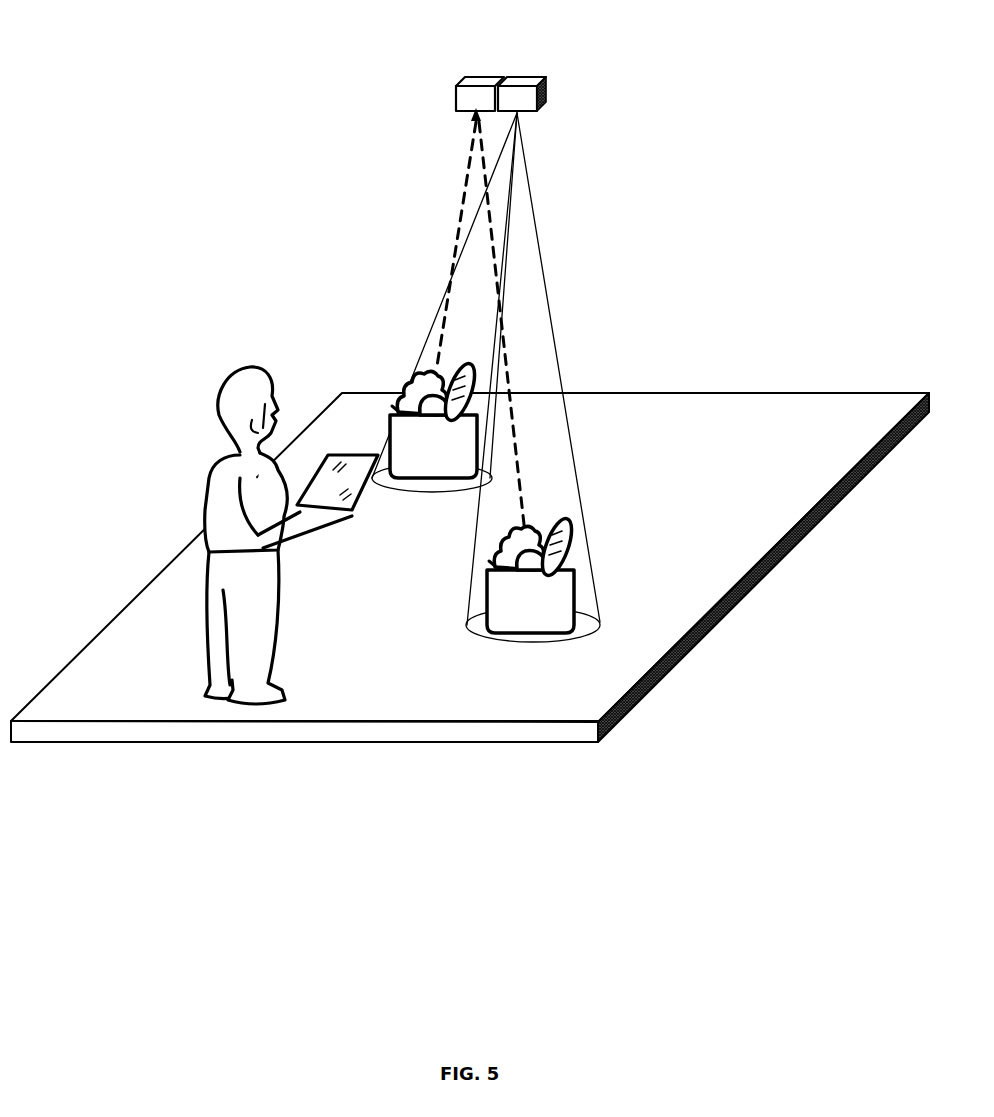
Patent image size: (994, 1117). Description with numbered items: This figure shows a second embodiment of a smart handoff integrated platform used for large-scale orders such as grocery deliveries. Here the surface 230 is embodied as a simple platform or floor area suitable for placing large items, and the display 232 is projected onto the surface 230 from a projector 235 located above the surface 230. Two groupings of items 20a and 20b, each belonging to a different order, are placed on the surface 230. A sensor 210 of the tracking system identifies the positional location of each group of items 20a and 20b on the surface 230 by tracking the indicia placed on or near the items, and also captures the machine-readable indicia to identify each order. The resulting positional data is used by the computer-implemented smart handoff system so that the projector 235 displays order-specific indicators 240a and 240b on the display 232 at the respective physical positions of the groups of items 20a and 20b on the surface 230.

The sensor 210 is at (487, 85).
The projector 235 is at (521, 87).
The surface 230 is at (470, 505).
The display 232 is at (722, 432).
The grouping of items 20a is at (378, 359).
The grouping of items 20b is at (597, 502).
The indicator 240a is at (421, 486).
The indicator 240b is at (583, 622).